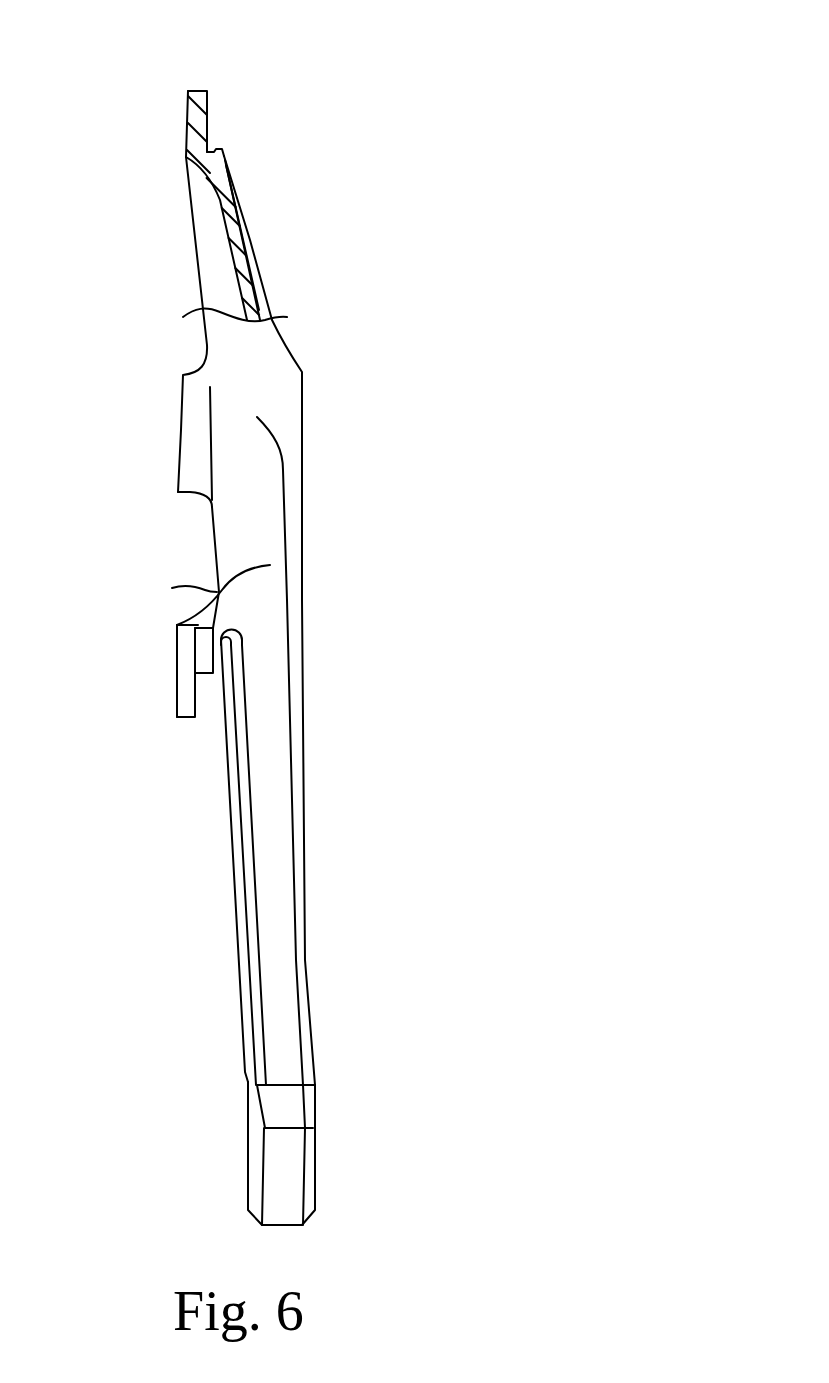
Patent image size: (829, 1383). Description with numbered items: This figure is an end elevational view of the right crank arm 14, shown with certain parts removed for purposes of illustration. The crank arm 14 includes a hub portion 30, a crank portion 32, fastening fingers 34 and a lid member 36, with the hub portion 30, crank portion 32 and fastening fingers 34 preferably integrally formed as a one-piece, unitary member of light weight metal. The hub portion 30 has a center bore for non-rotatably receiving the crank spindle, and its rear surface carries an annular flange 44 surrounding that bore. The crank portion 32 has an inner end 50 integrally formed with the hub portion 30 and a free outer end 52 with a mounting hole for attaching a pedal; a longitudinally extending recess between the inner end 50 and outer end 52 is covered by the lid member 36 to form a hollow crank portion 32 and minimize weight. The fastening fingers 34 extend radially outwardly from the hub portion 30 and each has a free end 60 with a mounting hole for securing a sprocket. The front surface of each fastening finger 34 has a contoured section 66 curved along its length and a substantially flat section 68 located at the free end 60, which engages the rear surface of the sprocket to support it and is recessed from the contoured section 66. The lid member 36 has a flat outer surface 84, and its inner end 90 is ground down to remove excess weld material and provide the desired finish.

The right crank arm 14 is at (345, 70).
The hub portion 30 is at (295, 340).
The crank portion 32 is at (308, 820).
The fastening fingers 34 is at (232, 167).
The lid member 36 is at (232, 847).
The annular flange 44 is at (183, 495).
The inner end 50 is at (307, 668).
The free outer end 52 is at (315, 1058).
The free end 60 is at (186, 157).
The contoured section 66 is at (252, 245).
The flat section 68 is at (208, 116).
The flat outer surface 84 is at (235, 898).
The inner end 90 is at (223, 648).